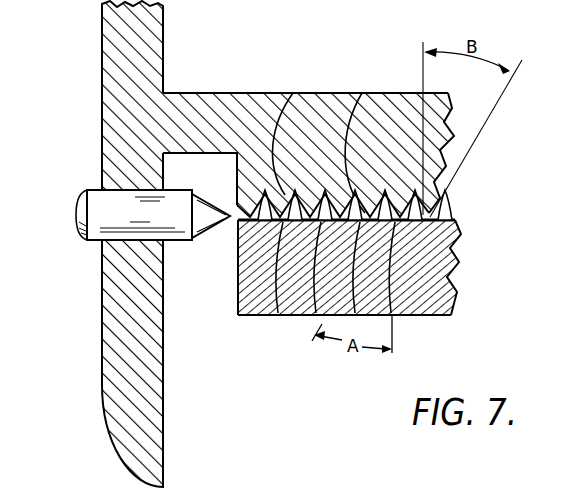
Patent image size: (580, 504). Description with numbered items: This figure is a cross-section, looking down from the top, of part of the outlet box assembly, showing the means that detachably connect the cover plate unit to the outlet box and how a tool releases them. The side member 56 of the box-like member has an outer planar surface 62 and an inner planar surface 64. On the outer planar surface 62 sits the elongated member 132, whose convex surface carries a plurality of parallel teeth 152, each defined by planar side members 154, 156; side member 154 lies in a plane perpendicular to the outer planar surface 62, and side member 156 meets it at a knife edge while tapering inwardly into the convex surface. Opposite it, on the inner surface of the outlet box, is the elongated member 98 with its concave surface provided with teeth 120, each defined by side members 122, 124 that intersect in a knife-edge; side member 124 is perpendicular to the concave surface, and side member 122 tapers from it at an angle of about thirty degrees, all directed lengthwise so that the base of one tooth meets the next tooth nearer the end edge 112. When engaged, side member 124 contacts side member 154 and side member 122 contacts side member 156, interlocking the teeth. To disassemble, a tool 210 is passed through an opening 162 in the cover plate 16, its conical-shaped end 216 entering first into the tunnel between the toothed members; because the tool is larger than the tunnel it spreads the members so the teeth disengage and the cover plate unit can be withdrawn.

The cover plate 16 is at (94, 66).
The side member 56 is at (202, 116).
The inner planar surface 64 is at (248, 93).
The outer planar surface 62 is at (229, 160).
The elongated member 132 is at (444, 148).
The teeth 152 is at (292, 93).
The side member 154 is at (360, 93).
The side member 122 is at (437, 216).
The side member 124 is at (455, 220).
The teeth 120 is at (457, 258).
The elongated member 98 is at (452, 303).
The end edge 112 is at (238, 300).
The side member 156 is at (303, 317).
The tool 210 is at (96, 204).
The conical-shaped end 216 is at (206, 241).
The opening 162 is at (92, 246).